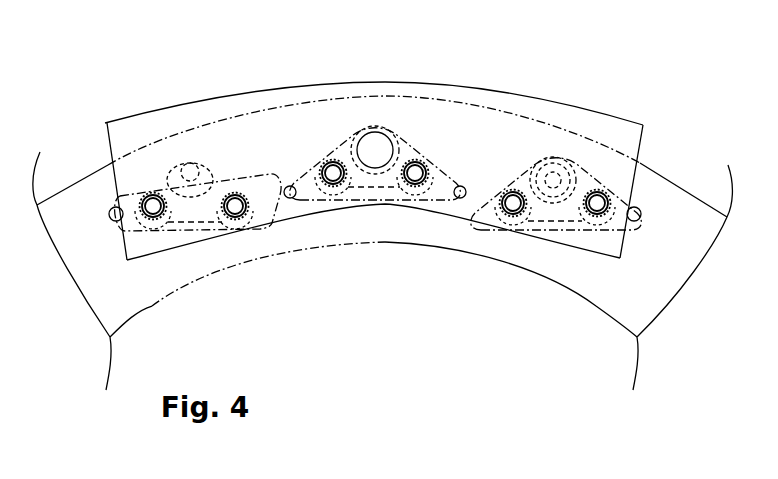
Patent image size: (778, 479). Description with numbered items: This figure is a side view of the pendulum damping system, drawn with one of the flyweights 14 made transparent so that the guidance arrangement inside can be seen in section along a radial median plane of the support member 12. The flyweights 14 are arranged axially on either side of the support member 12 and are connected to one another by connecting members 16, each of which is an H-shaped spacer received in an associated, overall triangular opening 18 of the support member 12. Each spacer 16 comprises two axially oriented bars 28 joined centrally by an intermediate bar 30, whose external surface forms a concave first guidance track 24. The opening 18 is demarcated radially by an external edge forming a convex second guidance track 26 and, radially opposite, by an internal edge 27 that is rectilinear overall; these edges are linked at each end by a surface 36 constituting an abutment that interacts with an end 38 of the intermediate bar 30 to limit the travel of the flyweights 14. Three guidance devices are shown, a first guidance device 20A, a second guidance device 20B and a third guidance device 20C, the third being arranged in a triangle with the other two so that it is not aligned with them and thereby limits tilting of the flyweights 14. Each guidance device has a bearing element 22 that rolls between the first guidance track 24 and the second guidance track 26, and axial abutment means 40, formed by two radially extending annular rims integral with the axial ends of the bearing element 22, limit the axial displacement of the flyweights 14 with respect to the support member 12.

The support member 12 is at (386, 218).
The flyweight 14 is at (525, 103).
The connecting member 16 is at (235, 183).
The opening 18 is at (143, 242).
The first guidance device 20A is at (180, 150).
The second guidance device 20B is at (570, 142).
The third guidance device 20C is at (341, 108).
The bearing element 22 is at (190, 160).
The first guidance track 24 is at (218, 310).
The second guidance track 26 is at (170, 190).
The internal edge 27 is at (198, 250).
The axial bar 28 is at (145, 192).
The intermediate bar 30 is at (175, 225).
The abutment surface 36 is at (135, 214).
The end of intermediate bar 38 is at (130, 200).
The axial abutment means 40 is at (208, 175).